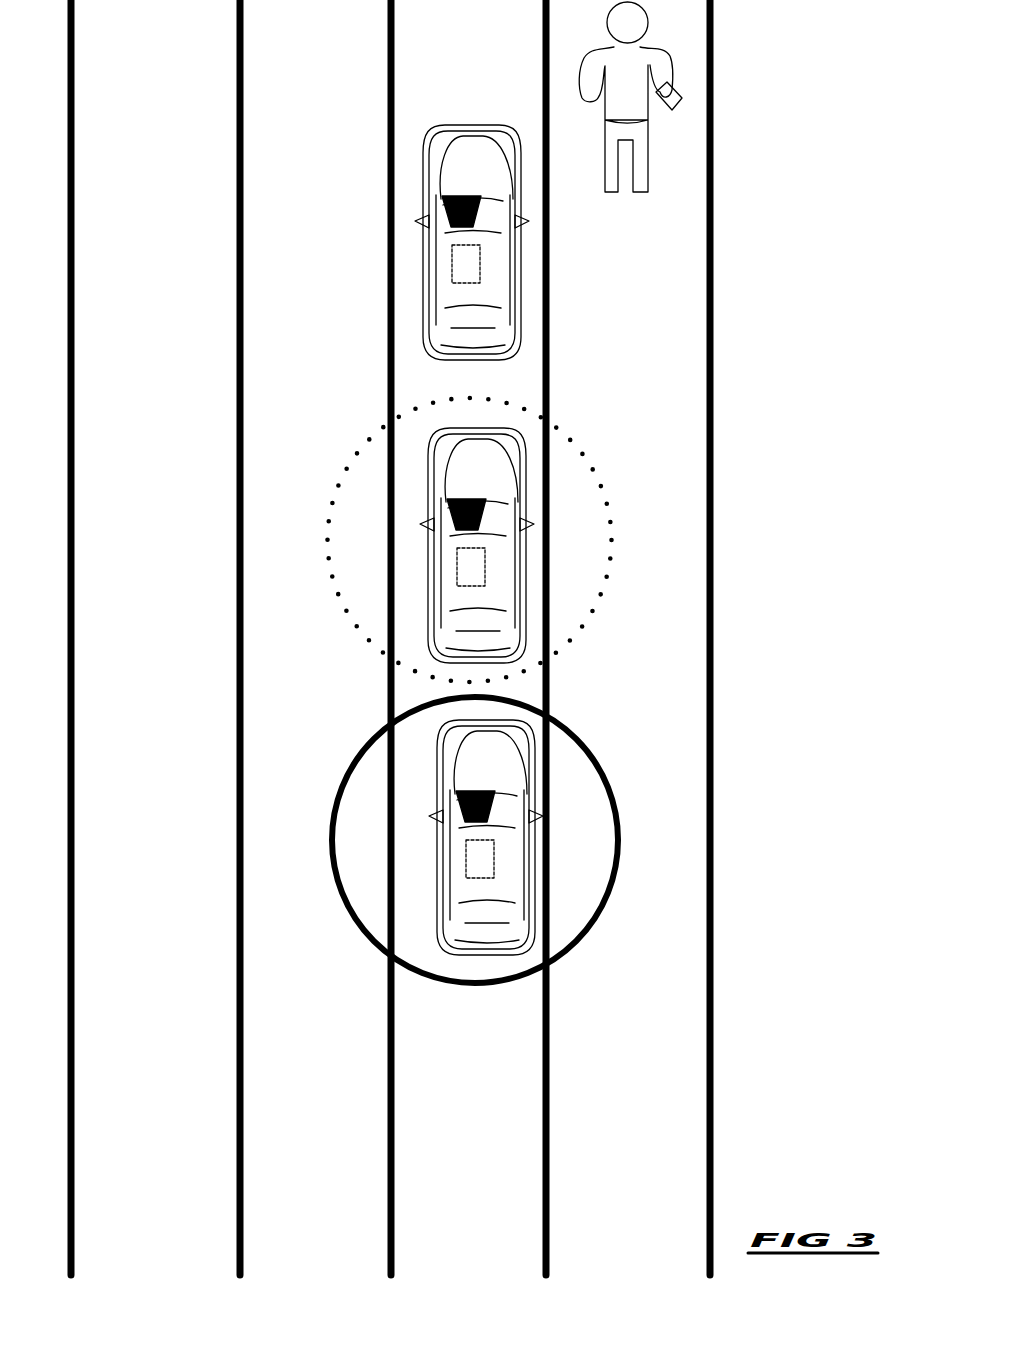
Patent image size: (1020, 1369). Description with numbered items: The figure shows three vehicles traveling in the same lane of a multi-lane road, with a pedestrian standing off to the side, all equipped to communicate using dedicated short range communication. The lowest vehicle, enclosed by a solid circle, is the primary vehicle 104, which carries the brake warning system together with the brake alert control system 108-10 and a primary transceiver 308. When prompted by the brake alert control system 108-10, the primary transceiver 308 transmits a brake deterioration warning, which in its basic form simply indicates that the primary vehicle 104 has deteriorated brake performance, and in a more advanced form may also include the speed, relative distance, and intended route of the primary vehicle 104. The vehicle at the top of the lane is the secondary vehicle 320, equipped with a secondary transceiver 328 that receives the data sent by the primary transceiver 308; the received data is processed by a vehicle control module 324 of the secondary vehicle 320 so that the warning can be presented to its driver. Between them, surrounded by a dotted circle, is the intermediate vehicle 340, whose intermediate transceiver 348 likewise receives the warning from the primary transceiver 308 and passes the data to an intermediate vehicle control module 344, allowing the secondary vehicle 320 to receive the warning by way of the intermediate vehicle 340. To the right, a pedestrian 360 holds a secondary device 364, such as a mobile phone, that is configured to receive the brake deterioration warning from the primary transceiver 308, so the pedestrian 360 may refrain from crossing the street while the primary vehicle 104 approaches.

The primary vehicle 104 is at (492, 840).
The brake alert control system 108-10 is at (585, 875).
The primary transceiver 308 is at (425, 813).
The secondary vehicle 320 is at (494, 242).
The vehicle control module 324 is at (559, 280).
The secondary transceiver 328 is at (411, 217).
The intermediate vehicle 340 is at (443, 540).
The intermediate vehicle control module 344 is at (564, 582).
The intermediate transceiver 348 is at (417, 520).
The pedestrian 360 is at (606, 97).
The secondary device 364 is at (719, 96).